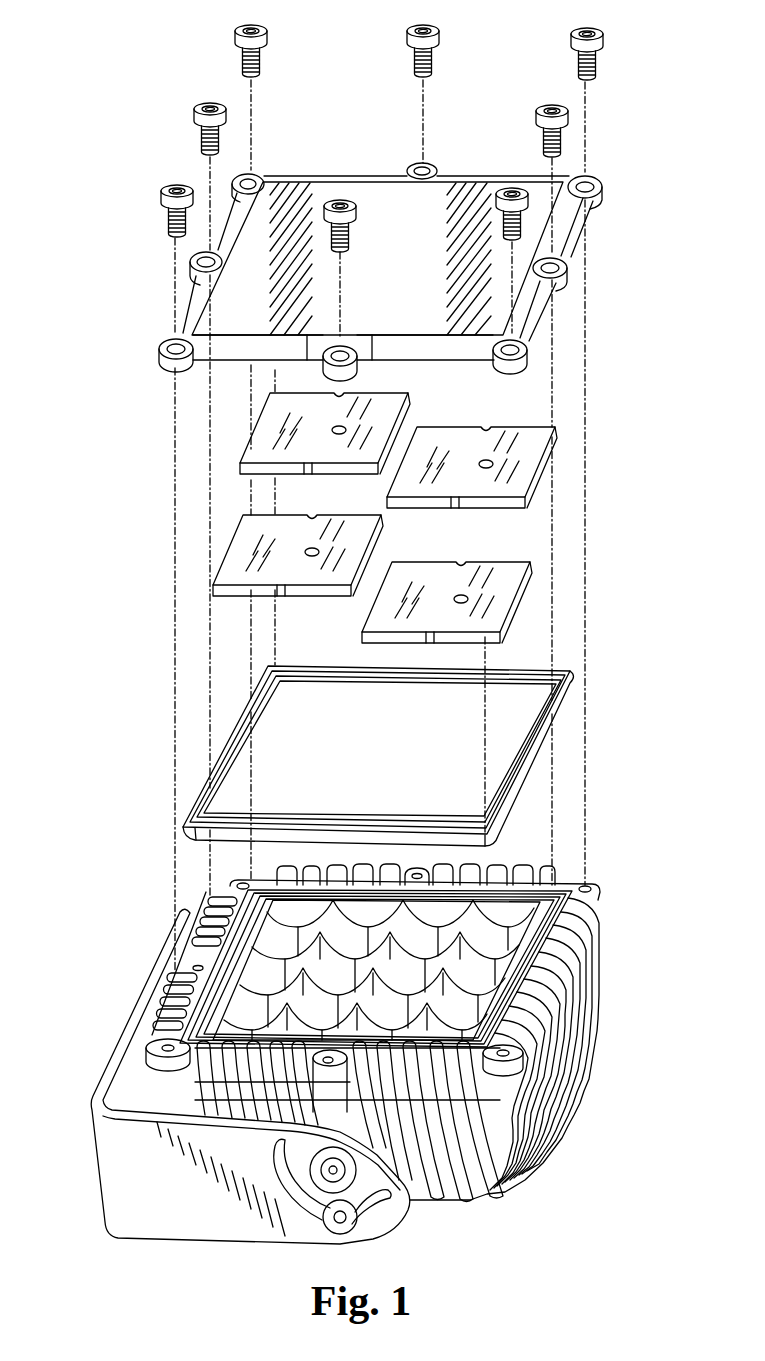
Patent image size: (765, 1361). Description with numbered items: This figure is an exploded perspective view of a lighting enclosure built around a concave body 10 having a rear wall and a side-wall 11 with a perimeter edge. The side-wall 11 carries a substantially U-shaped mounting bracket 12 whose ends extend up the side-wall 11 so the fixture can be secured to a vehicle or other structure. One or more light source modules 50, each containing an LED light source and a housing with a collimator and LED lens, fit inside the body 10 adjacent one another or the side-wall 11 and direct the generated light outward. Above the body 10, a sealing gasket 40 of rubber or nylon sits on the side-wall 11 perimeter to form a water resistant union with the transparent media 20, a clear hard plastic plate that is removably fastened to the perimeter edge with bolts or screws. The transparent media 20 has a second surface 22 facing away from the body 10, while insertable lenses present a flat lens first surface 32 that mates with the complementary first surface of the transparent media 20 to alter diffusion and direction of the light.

The body 10 is at (363, 1010).
The side-wall 11 is at (152, 1044).
The mounting bracket 12 is at (105, 1165).
The transparent media 20 is at (620, 160).
The second surface 22 is at (320, 186).
The lens first surface 32 is at (388, 402).
The sealing gasket 40 is at (505, 815).
The light source module 50 is at (590, 884).